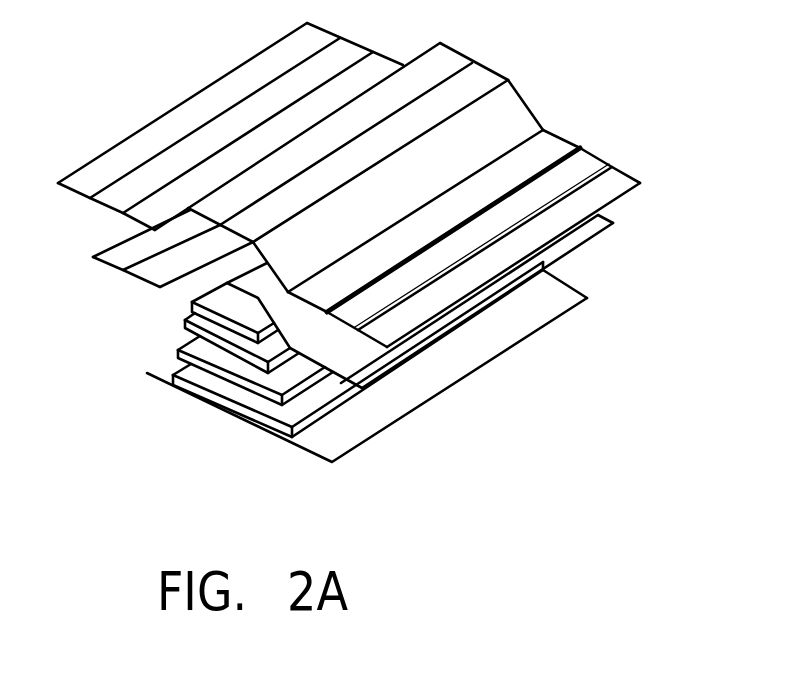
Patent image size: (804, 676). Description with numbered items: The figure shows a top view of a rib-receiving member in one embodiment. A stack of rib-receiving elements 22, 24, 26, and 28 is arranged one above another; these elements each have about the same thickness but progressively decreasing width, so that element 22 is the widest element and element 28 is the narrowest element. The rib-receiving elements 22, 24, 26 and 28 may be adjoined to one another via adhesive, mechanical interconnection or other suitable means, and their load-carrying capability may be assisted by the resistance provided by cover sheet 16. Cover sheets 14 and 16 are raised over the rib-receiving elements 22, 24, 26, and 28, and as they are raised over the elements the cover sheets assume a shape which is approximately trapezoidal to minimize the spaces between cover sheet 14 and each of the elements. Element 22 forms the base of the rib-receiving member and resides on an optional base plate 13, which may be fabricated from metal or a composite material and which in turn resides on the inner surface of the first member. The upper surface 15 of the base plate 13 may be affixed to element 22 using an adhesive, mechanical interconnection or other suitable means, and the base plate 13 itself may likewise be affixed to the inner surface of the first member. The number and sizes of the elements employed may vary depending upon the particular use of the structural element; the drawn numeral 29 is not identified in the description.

The base plate 13 is at (432, 403).
The cover sheet 14 is at (367, 365).
The upper surface 15 is at (542, 308).
The cover sheet 16 is at (165, 135).
The rib-receiving element 22 is at (270, 425).
The rib-receiving element 24 is at (236, 388).
The rib-receiving element 26 is at (212, 352).
The rib-receiving element 28 is at (206, 326).
The top layer 29 is at (223, 305).